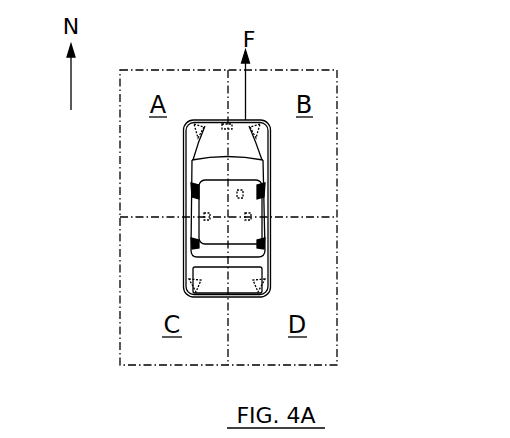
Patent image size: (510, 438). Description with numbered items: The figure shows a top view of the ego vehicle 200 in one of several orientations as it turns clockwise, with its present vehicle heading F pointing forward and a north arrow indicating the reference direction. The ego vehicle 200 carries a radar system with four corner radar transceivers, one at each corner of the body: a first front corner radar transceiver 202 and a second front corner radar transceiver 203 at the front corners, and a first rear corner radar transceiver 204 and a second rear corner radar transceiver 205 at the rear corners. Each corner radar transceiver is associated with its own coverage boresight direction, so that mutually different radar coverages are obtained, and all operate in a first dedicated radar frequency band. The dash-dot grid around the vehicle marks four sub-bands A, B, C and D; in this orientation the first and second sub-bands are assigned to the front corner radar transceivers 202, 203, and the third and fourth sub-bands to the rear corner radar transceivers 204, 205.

The ego vehicle 200 is at (242, 168).
The first front corner radar transceiver 202 is at (200, 128).
The second front corner radar transceiver 203 is at (262, 130).
The first rear corner radar transceiver 204 is at (190, 284).
The second rear corner radar transceiver 205 is at (268, 288).